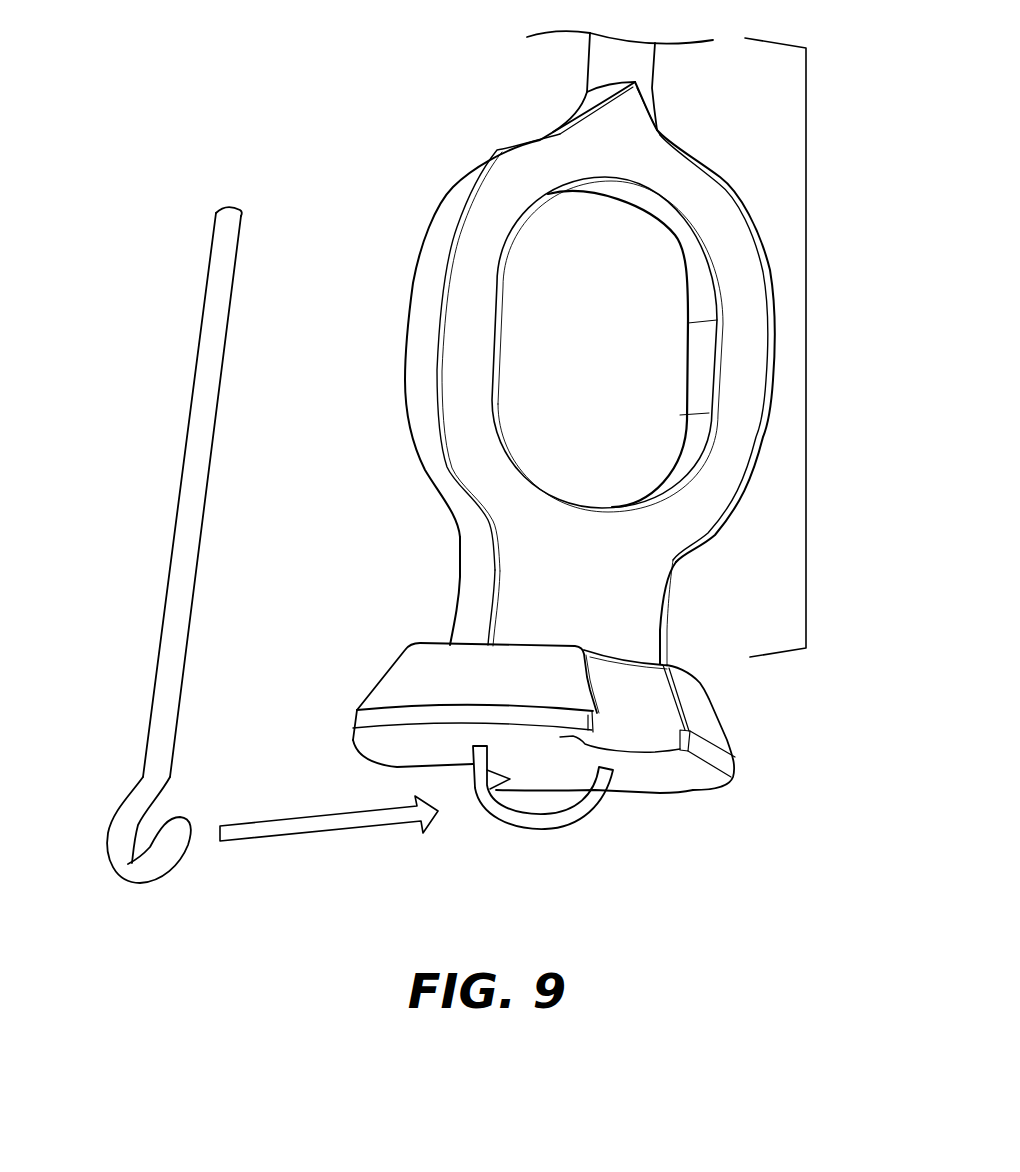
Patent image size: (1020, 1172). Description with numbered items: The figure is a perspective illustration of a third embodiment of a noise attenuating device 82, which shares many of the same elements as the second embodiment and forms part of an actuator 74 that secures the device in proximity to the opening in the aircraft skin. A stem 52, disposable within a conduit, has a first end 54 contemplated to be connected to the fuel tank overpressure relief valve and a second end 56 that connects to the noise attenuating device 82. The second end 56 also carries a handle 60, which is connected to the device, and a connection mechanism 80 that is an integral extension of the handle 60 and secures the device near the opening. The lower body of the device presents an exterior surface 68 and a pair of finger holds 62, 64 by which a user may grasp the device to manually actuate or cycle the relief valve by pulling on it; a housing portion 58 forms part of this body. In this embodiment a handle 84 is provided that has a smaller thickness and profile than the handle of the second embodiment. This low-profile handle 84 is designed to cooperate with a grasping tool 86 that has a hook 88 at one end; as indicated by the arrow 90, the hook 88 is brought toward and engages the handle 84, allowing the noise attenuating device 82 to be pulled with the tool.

The stem 52 is at (600, 50).
The first end 54 is at (657, 47).
The second end 56 is at (652, 88).
The base housing 58 is at (413, 672).
The handle 60 is at (410, 381).
The finger hold 62 is at (432, 773).
The finger hold 64 is at (637, 713).
The exterior surface 68 is at (547, 762).
The actuator 74 is at (806, 255).
The connection mechanism 80 is at (462, 581).
The noise attenuating device 82 is at (698, 802).
The handle 84 is at (597, 807).
The grasping tool 86 is at (178, 594).
The hook 88 is at (118, 837).
The arrow 90 is at (308, 813).